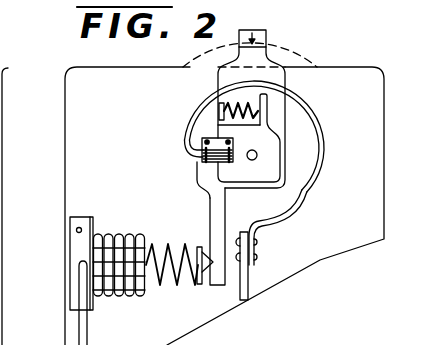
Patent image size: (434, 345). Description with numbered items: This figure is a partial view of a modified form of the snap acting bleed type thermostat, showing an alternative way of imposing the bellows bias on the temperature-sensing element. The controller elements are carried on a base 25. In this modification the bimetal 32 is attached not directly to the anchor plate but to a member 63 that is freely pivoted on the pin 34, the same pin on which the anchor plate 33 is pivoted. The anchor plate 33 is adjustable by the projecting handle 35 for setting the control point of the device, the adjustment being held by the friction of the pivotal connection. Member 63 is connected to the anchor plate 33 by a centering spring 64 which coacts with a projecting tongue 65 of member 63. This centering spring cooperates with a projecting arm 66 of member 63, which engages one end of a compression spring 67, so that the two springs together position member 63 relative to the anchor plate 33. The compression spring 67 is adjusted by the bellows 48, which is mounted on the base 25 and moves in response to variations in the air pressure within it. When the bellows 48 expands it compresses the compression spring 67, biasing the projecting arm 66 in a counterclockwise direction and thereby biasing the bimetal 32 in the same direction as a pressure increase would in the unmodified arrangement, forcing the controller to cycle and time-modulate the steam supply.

The base 25 is at (3, 117).
The bimetal 32 is at (312, 193).
The anchor plate 33 is at (277, 80).
The pin 34 is at (257, 154).
The projecting handle 35 is at (263, 40).
The bellows 48 is at (100, 235).
The member 63 is at (203, 170).
The centering spring 64 is at (218, 89).
The projecting tongue 65 is at (263, 116).
The projecting arm 66 is at (216, 210).
The compression spring 67 is at (176, 244).